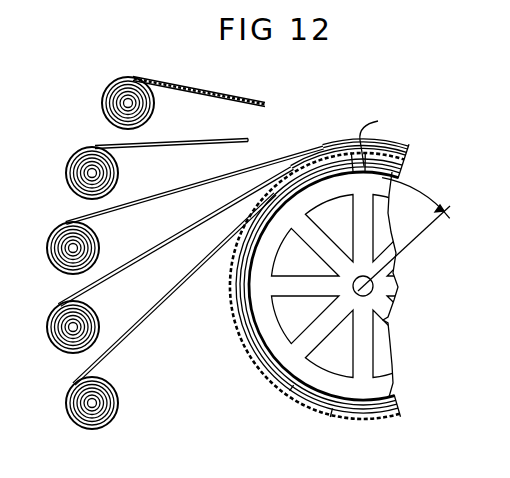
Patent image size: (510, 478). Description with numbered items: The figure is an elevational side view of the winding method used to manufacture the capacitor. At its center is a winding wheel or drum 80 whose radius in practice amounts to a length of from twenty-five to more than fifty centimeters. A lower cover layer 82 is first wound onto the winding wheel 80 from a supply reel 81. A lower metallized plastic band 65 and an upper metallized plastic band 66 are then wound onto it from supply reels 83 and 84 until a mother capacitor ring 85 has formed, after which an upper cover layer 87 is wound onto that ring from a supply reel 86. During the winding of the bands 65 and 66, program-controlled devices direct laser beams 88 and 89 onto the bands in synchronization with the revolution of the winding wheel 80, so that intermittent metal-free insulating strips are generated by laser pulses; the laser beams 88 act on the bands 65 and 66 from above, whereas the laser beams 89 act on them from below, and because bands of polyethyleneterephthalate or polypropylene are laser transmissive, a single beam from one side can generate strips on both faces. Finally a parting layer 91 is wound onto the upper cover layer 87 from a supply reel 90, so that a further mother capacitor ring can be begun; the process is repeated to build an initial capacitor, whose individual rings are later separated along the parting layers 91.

The lower metallized plastic band 65 is at (165, 197).
The upper metallized plastic band 66 is at (150, 251).
The winding wheel or drum 80 is at (392, 386).
The supply reel 81 is at (70, 418).
The lower cover layer 82 is at (152, 308).
The supply reel 83 is at (55, 330).
The supply reel 84 is at (50, 250).
The mother capacitor ring 85 is at (338, 420).
The supply reel 86 is at (73, 165).
The upper cover layer 87 is at (206, 144).
The laser beam 88 is at (237, 164).
The laser beam 89 is at (220, 185).
The supply reel 90 is at (117, 69).
The parting layer 91 is at (237, 72).